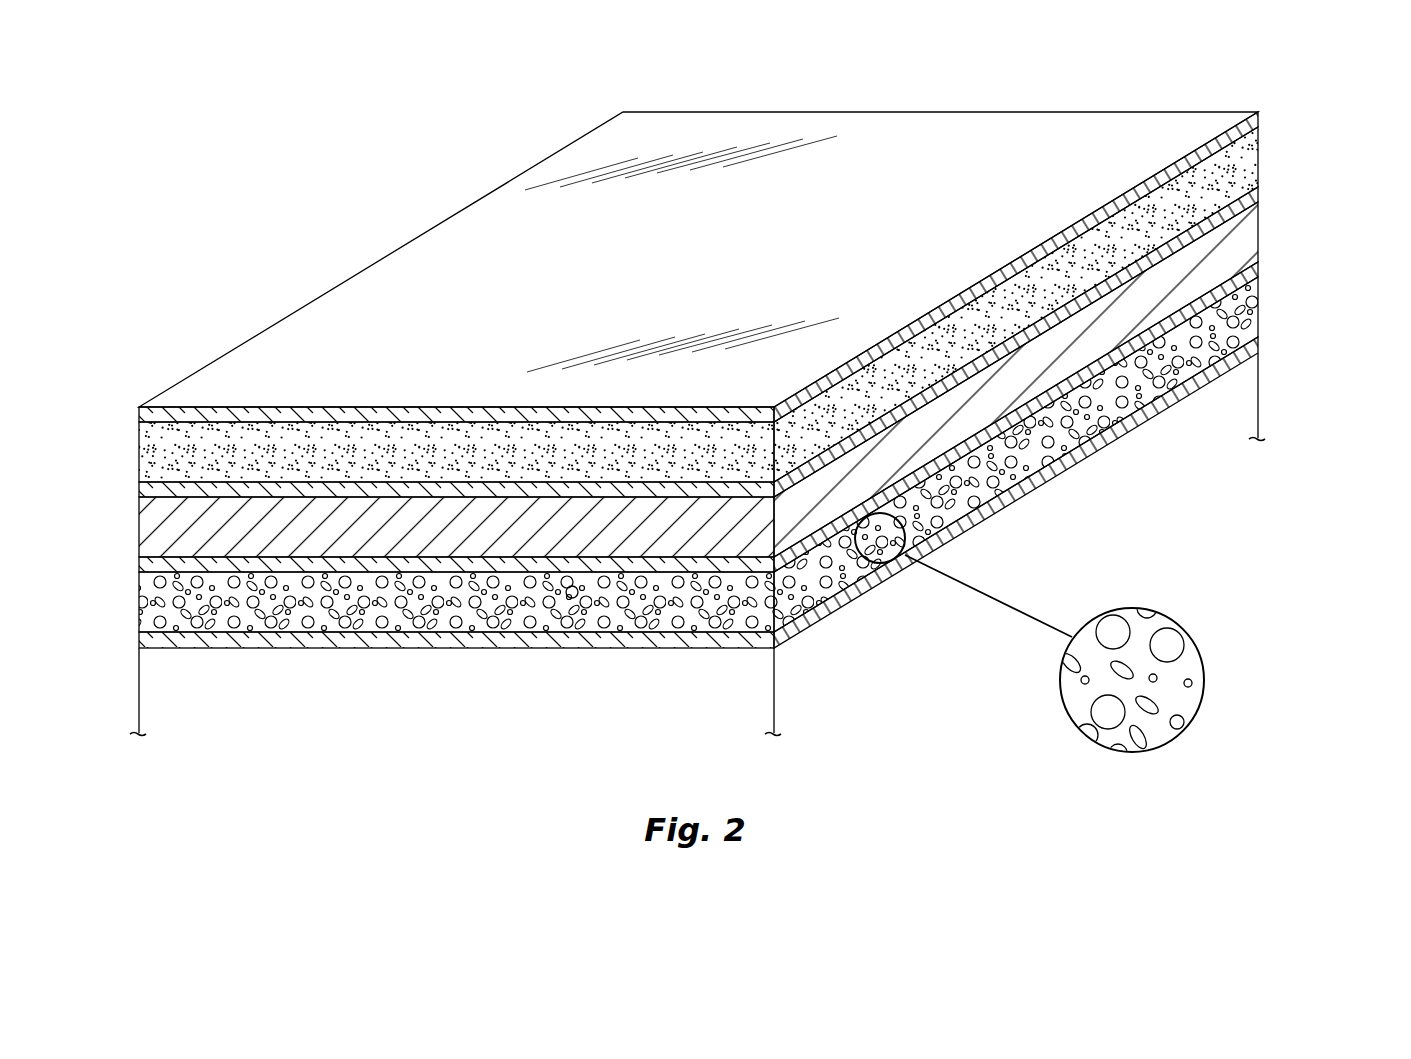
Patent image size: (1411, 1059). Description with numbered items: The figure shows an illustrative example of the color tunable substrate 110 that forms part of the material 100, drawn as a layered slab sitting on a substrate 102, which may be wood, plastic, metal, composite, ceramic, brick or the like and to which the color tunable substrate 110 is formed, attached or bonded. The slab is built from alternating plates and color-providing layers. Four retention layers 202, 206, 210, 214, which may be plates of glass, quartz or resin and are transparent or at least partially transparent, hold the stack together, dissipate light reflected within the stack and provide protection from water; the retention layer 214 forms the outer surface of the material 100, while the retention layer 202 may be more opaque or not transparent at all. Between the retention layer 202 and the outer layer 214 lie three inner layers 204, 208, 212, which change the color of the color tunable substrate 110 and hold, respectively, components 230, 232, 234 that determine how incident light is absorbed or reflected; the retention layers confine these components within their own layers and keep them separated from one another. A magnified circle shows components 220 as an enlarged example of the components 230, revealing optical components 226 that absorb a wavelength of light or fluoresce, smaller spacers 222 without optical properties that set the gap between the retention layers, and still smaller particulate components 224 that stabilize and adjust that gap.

The material 100 is at (1306, 397).
The substrate 102 is at (138, 690).
The color tunable substrate 110 is at (1272, 343).
The retention layer 202 is at (138, 640).
The layer 204 is at (138, 603).
The retention layer 206 is at (138, 566).
The layer 208 is at (138, 528).
The retention layer 210 is at (138, 491).
The layer 212 is at (138, 453).
The retention layer 214 is at (138, 415).
The components 220 is at (1195, 712).
The spacers 222 is at (1153, 678).
The particulate components 224 is at (1113, 670).
The optical components 226 is at (1170, 637).
The components 230 is at (568, 595).
The components 232 is at (497, 523).
The components 234 is at (405, 453).